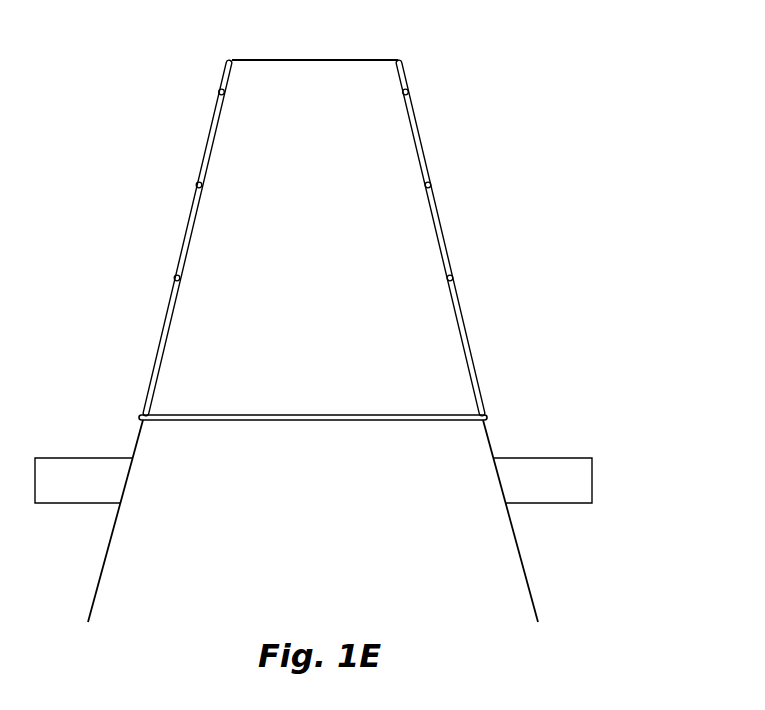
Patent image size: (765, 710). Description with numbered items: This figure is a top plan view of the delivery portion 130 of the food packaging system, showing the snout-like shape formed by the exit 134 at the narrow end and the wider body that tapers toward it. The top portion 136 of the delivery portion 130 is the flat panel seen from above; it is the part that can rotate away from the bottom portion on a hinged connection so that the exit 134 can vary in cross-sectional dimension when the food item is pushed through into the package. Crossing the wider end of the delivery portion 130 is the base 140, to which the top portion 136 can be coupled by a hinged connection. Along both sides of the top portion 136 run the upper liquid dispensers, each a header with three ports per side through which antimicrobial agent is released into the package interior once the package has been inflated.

The delivery portion 130 is at (345, 312).
The exit 134 is at (383, 60).
The top portion 136 is at (372, 229).
The base 140 is at (577, 487).